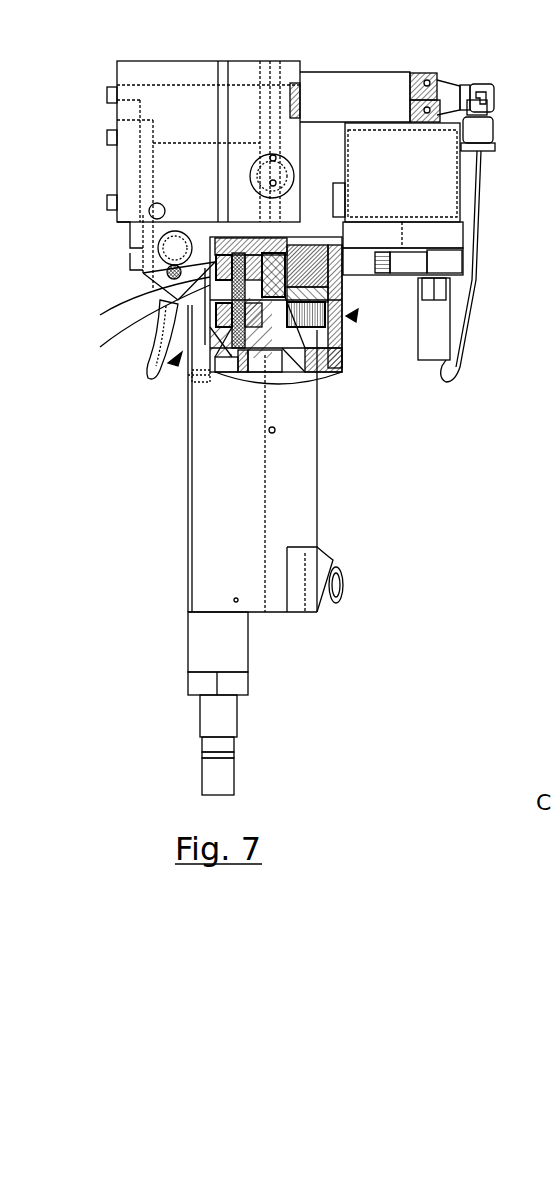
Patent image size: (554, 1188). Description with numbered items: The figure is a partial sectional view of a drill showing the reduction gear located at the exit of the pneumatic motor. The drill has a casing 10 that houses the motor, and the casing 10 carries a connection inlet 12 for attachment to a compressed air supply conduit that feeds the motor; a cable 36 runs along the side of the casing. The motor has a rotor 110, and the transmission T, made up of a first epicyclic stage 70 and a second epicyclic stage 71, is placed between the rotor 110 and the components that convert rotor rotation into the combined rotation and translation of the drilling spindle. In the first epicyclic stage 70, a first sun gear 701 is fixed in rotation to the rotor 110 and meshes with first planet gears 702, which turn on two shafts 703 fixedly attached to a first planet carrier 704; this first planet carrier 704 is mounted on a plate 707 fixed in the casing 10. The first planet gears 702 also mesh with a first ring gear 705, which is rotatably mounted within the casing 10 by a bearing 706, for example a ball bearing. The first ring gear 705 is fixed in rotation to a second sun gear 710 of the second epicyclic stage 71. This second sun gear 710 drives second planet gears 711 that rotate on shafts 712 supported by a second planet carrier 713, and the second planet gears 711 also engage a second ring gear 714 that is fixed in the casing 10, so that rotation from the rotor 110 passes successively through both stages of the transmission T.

The casing 10 is at (297, 520).
The connection inlet 12 is at (217, 658).
The cable 36 is at (480, 177).
The first epicyclic stage 70 is at (170, 357).
The second epicyclic stage 71 is at (100, 315).
The rotor 110 is at (275, 365).
The first sun gear 701 is at (300, 380).
The first planet gears 702 is at (340, 332).
The shafts 703 is at (250, 355).
The first planet carrier 704 is at (262, 358).
The first ring gear 705 is at (177, 325).
The bearing 706 is at (100, 347).
The plate 707 is at (325, 362).
The second sun gear 710 is at (295, 243).
The second planet gears 711 is at (212, 237).
The shafts 712 is at (238, 236).
The second planet carrier 713 is at (275, 237).
The second ring gear 714 is at (192, 278).
The transmission T is at (355, 315).